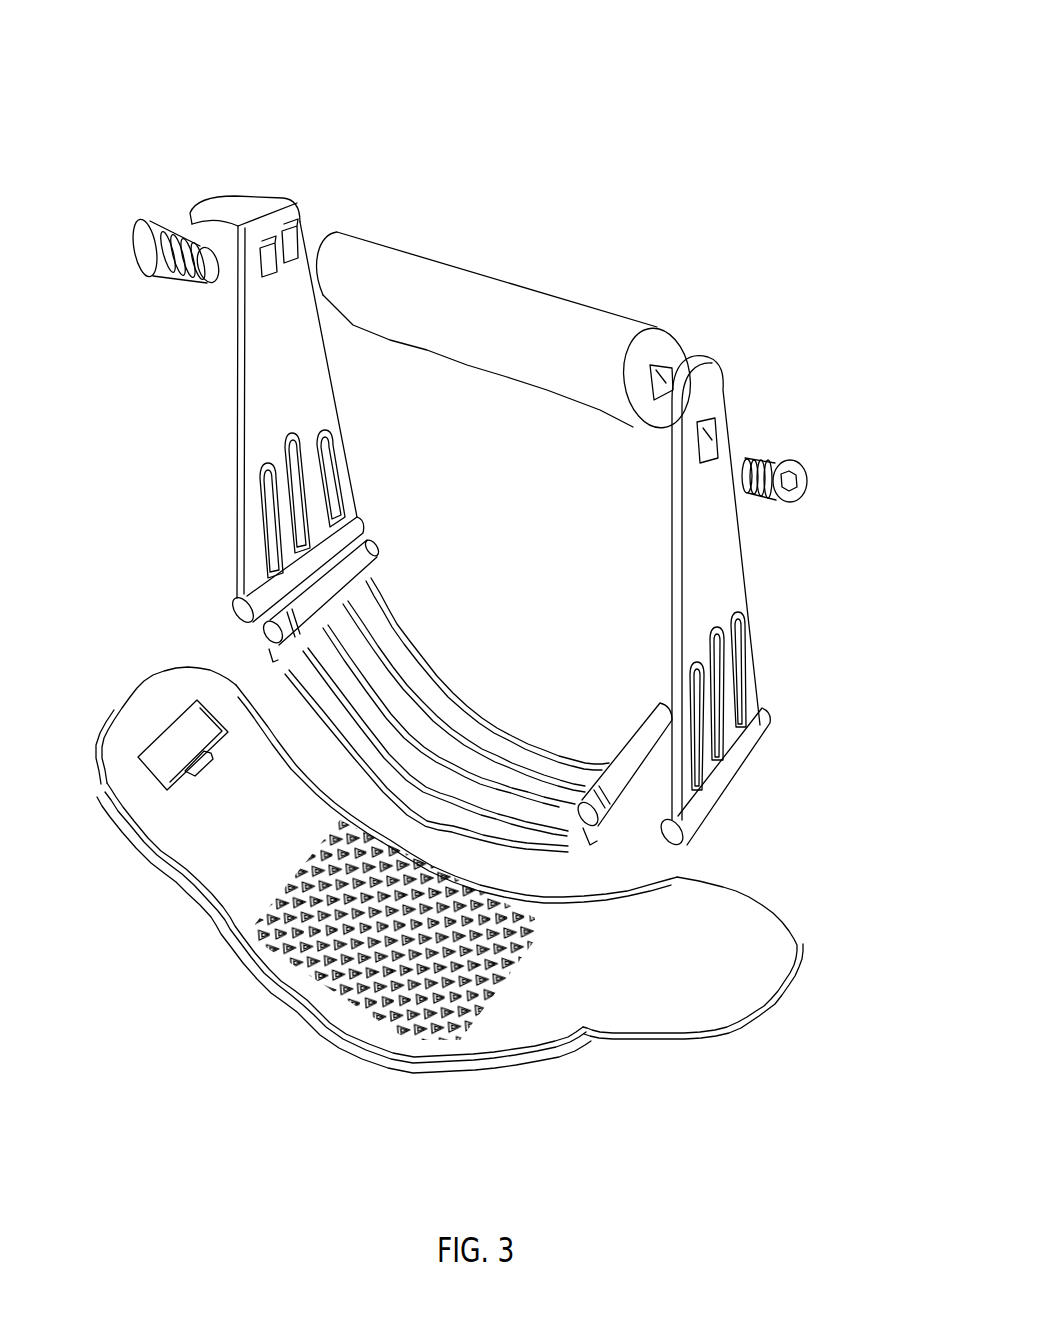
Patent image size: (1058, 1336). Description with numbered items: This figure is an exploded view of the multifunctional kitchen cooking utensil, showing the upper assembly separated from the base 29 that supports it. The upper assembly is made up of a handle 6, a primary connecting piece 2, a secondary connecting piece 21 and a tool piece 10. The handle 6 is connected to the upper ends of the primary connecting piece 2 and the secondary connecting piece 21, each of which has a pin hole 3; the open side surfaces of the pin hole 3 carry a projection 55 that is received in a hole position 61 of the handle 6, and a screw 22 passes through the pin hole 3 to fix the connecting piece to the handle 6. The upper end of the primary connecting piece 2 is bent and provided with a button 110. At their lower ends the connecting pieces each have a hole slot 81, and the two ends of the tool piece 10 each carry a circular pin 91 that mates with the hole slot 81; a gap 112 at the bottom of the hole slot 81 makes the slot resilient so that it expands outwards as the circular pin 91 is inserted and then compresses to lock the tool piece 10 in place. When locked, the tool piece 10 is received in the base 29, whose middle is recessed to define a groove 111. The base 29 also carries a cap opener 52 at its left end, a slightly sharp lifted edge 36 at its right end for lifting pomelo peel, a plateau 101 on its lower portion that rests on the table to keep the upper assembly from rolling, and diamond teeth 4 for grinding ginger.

The primary connecting piece 2 is at (211, 414).
The pin hole 3 is at (743, 537).
The diamond teeth 4 is at (347, 949).
The handle 6 is at (507, 283).
The tool piece 10 is at (387, 871).
The secondary connecting piece 21 is at (785, 701).
The screw 22 is at (479, 289).
The base 29 is at (148, 797).
The lifted edge 36 is at (693, 1040).
The cap opener 52 is at (144, 692).
The projection 55 is at (230, 247).
The hole position 61 is at (717, 297).
The hole slot 81 is at (455, 692).
The circular pin 91 is at (466, 688).
The plateau 101 is at (345, 965).
The button 110 is at (275, 115).
The groove 111 is at (344, 987).
The gap 112 is at (576, 998).